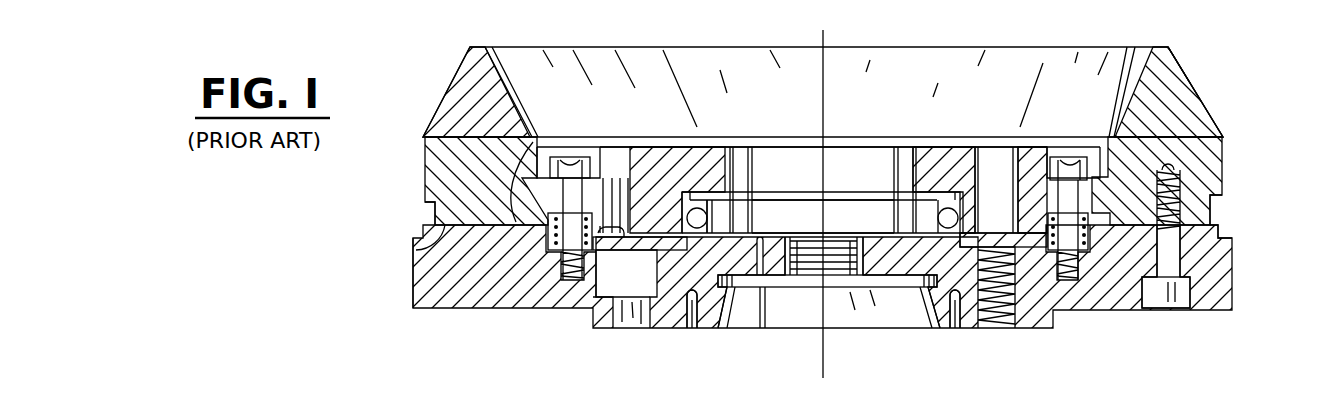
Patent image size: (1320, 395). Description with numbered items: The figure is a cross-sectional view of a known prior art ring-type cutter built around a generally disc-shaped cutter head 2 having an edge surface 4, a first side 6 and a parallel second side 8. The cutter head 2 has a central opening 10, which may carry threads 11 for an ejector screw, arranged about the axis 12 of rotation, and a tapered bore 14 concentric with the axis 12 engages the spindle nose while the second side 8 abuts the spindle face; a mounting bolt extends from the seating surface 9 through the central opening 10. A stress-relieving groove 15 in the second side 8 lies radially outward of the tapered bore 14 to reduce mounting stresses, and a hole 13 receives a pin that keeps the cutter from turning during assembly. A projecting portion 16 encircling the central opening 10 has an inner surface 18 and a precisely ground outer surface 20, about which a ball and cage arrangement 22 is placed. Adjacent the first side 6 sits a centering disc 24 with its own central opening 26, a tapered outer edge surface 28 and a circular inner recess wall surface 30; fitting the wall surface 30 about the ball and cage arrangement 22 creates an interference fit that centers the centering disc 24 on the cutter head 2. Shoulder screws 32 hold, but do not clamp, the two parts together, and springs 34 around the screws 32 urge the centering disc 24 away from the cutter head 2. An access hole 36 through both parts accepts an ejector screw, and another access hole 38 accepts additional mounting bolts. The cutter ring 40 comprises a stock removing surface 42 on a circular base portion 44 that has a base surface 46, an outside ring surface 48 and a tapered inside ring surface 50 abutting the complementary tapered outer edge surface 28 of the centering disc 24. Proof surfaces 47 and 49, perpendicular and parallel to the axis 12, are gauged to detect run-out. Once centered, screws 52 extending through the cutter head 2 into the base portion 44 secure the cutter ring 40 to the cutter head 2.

The cutter head 2 is at (462, 308).
The edge surface 4 is at (413, 282).
The first side 6 is at (420, 236).
The second side 8 is at (658, 330).
The seating surface 9 is at (740, 200).
The central opening 10 is at (840, 310).
The threads 11 is at (880, 288).
The axis 12 is at (823, 73).
The hole 13 is at (764, 323).
The tapered bore 14 is at (741, 321).
The stress-relieving groove 15 is at (693, 327).
The projecting portion 16 is at (913, 220).
The inner surface 18 is at (900, 191).
The outer surface 20 is at (749, 151).
The ball and cage arrangement 22 is at (950, 180).
The centering disc 24 is at (695, 155).
The central opening 26 is at (842, 157).
The outer edge surface 28 is at (568, 158).
The inner recess wall surface 30 is at (989, 165).
The shoulder screws 32 is at (590, 158).
The springs 34 is at (588, 238).
The access hole 36 is at (1000, 316).
The access hole 38 is at (620, 332).
The cutter ring 40 is at (1204, 100).
The stock removing surface 42 is at (1186, 72).
The circular base portion 44 is at (1214, 160).
The base surface 46 is at (433, 213).
The proof surface 47 is at (1212, 200).
The outside ring surface 48 is at (425, 160).
The proof surface 49 is at (1216, 216).
The tapered inside ring surface 50 is at (524, 129).
The screw 52 is at (1170, 306).